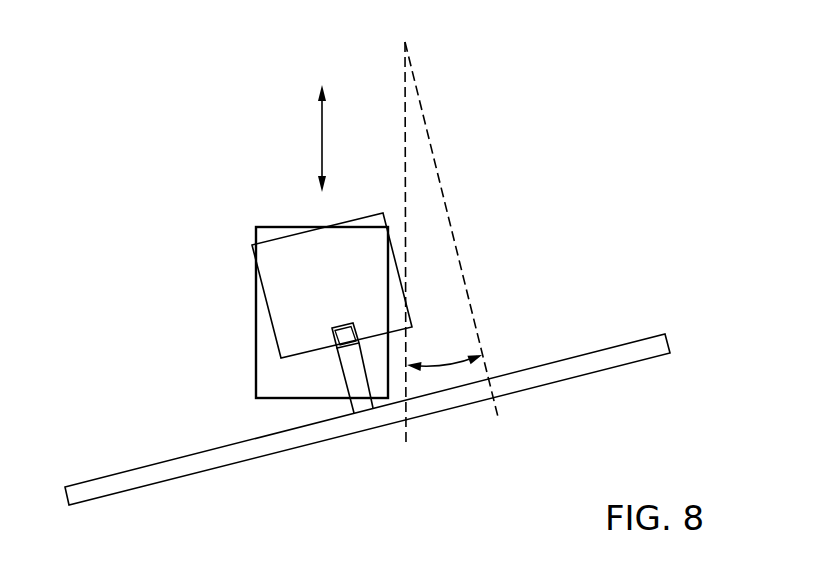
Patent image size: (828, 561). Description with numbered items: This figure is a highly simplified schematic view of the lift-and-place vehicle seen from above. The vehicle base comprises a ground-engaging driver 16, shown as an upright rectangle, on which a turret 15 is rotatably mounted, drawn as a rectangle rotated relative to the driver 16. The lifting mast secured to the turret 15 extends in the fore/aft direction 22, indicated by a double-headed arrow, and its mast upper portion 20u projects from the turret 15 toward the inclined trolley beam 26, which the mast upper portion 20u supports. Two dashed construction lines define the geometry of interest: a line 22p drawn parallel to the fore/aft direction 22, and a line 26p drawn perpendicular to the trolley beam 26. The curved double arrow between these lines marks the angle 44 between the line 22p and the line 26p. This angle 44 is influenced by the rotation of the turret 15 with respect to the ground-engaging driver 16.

The turret 15 is at (275, 257).
The ground-engaging driver 16 is at (292, 387).
The mast upper portion 20u is at (363, 403).
The fore/aft direction 22 is at (322, 148).
The line parallel to fore/aft direction 22p is at (403, 120).
The trolley beam 26 is at (122, 483).
The line perpendicular to trolley beam 26p is at (445, 202).
The angle 44 is at (455, 360).